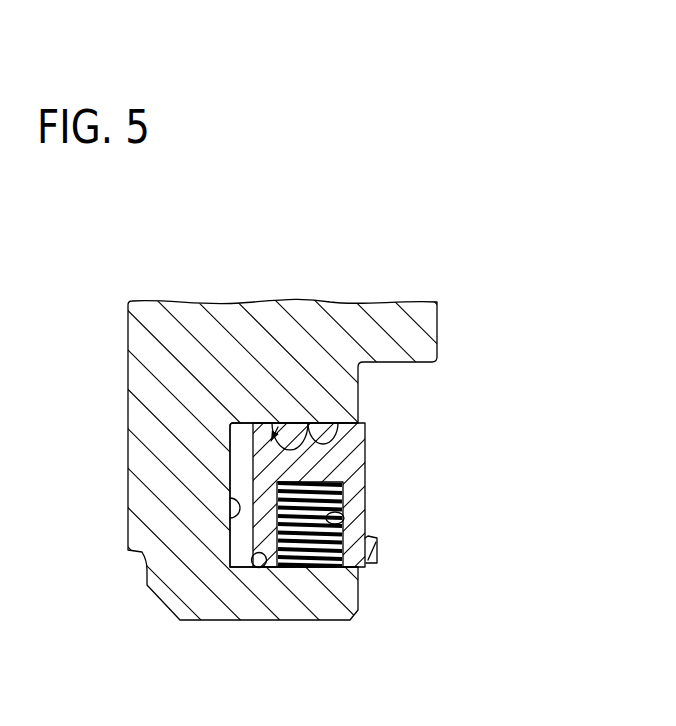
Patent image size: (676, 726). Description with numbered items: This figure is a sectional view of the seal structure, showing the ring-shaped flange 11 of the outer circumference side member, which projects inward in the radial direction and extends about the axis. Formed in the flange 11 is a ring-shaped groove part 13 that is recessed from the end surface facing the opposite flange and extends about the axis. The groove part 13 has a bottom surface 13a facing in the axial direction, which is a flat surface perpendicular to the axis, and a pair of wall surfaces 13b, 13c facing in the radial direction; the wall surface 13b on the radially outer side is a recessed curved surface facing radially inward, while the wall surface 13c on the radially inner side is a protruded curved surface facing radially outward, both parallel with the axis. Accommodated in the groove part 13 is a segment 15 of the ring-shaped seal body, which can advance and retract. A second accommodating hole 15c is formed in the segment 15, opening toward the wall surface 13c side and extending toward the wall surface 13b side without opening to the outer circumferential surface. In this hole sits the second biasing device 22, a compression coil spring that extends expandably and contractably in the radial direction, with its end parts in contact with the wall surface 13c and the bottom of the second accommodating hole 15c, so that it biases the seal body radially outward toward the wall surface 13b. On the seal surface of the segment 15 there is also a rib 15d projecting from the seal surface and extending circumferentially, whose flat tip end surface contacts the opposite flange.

The flange 11 is at (257, 306).
The groove part 13 is at (310, 423).
The bottom surface 13a is at (230, 518).
The wall surface 13b is at (365, 432).
The wall surface 13c is at (246, 568).
The segment 15 is at (370, 448).
The second accommodating hole 15c is at (344, 520).
The rib 15d is at (378, 546).
The second biasing device 22 is at (309, 550).